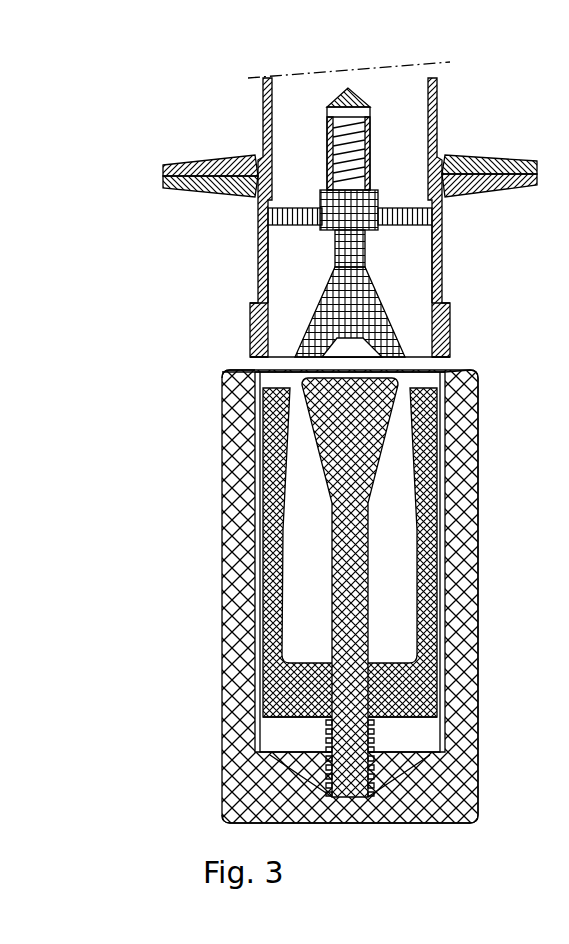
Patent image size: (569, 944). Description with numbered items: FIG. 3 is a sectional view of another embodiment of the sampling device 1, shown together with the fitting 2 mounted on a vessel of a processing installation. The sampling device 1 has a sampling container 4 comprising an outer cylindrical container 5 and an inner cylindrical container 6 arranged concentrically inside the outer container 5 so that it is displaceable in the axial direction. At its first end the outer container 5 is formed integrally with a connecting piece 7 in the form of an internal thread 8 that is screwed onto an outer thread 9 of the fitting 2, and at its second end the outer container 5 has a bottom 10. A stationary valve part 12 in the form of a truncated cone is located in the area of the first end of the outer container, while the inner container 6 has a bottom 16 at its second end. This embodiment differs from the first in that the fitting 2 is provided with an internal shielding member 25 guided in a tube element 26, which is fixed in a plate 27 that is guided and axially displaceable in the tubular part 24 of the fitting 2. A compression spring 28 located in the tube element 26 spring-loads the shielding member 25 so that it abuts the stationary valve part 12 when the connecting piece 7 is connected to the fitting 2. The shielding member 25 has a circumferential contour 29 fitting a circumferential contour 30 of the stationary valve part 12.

The sampling device 1 is at (505, 540).
The fitting 2 is at (442, 234).
The sampling container 4 is at (221, 595).
The outer cylindrical container 5 is at (465, 707).
The inner cylindrical container 6 is at (443, 508).
The connecting piece 7 is at (221, 398).
The internal thread 8 is at (445, 372).
The outer thread 9 is at (450, 323).
The bottom 10 is at (392, 807).
The stationary valve part 12 is at (342, 448).
The bottom 16 is at (262, 720).
The tubular part 24 is at (300, 270).
The shielding member 25 is at (378, 293).
The tube element 26 is at (378, 160).
The plate 27 is at (287, 226).
The compression spring 28 is at (377, 106).
The circumferential contour 29 is at (292, 358).
The circumferential contour 30 is at (258, 372).